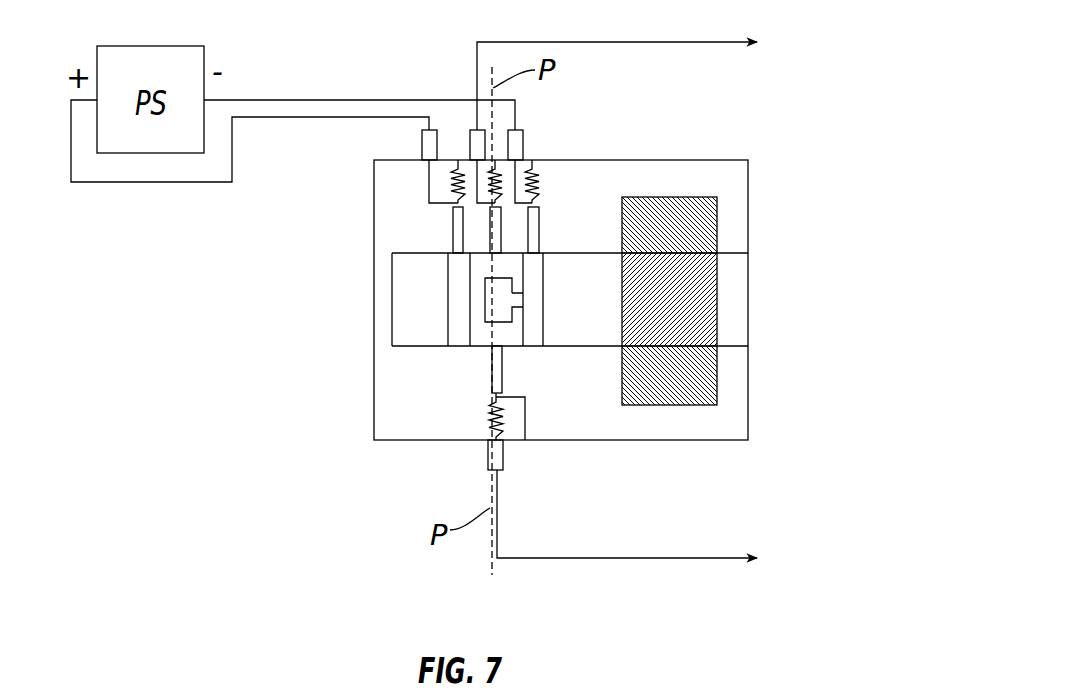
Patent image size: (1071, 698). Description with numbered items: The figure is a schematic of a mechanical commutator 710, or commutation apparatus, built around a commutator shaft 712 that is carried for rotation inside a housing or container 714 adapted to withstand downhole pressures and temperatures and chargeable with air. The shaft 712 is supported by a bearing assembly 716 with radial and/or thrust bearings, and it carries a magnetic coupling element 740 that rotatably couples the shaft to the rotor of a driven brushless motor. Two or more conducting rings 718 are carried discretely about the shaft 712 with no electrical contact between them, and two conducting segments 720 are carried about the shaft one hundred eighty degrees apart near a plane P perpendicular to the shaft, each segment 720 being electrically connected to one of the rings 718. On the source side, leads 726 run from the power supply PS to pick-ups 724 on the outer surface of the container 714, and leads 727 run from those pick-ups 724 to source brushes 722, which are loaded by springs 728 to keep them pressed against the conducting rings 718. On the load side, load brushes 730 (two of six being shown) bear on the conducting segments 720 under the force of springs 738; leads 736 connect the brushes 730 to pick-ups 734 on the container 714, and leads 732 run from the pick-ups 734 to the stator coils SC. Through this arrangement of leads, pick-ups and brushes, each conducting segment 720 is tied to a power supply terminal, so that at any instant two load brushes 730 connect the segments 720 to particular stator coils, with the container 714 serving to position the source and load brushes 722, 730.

The mechanical commutator 710 is at (333, 452).
The commutator shaft 712 is at (593, 338).
The housing or container 714 is at (749, 159).
The bearing assembly 716 is at (738, 290).
The conducting rings 718 is at (538, 262).
The conducting segments 720 is at (486, 313).
The brushes 722 is at (449, 218).
The pick-ups 724 is at (419, 138).
The leads 726 is at (335, 117).
The leads 727 is at (430, 173).
The springs 728 is at (534, 187).
The brushes 730 is at (489, 250).
The leads 732 is at (548, 42).
The pick-ups 734 is at (468, 138).
The leads 736 is at (526, 430).
The springs 738 is at (494, 430).
The magnetic coupling element 740 is at (719, 376).